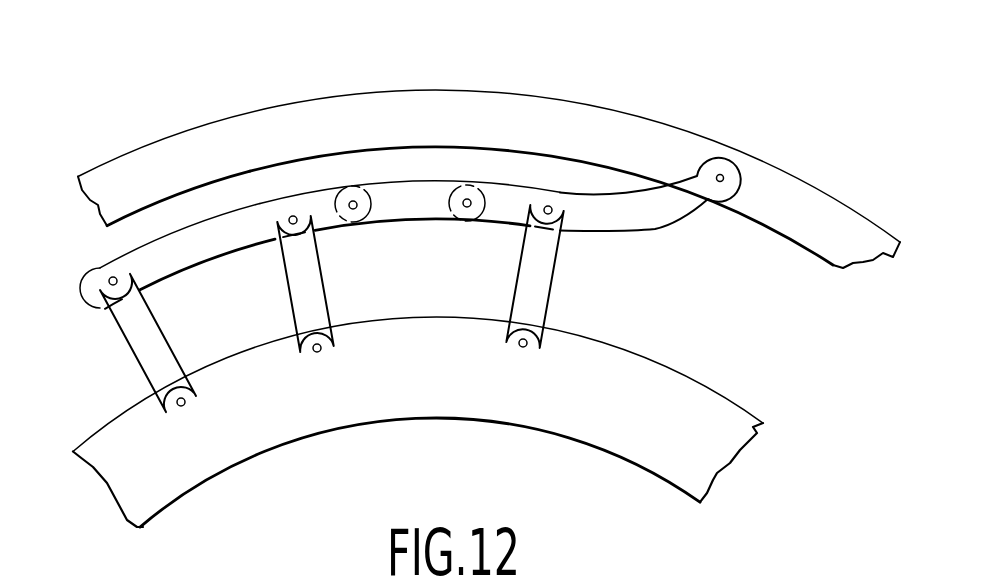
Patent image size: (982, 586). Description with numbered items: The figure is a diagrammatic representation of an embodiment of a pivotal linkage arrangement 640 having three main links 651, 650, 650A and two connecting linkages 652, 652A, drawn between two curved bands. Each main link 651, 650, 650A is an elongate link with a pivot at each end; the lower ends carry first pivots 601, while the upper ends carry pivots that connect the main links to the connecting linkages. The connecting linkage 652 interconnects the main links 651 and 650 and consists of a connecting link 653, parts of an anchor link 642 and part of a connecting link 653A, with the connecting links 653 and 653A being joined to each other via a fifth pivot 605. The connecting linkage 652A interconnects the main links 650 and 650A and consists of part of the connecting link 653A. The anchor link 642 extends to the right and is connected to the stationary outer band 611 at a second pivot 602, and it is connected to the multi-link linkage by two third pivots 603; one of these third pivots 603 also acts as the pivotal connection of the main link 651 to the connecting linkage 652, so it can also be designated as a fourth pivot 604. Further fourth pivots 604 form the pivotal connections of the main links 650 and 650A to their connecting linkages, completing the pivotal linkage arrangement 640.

The first pivot 601 is at (187, 401).
The second pivot 602 is at (722, 175).
The third pivot 603 is at (469, 207).
The fourth pivot 604 is at (112, 281).
The fifth pivot 605 is at (353, 200).
The outer ring 611 is at (792, 187).
The pivotal linkage arrangement 640 is at (603, 272).
The anchor link 642 is at (677, 210).
The main link 650 is at (297, 293).
The main link 650A is at (133, 340).
The main link 651 is at (543, 293).
The connecting linkage 652 is at (393, 170).
The connecting linkage 652A is at (155, 230).
The connecting link 653 is at (420, 193).
The connecting link 653A is at (222, 227).